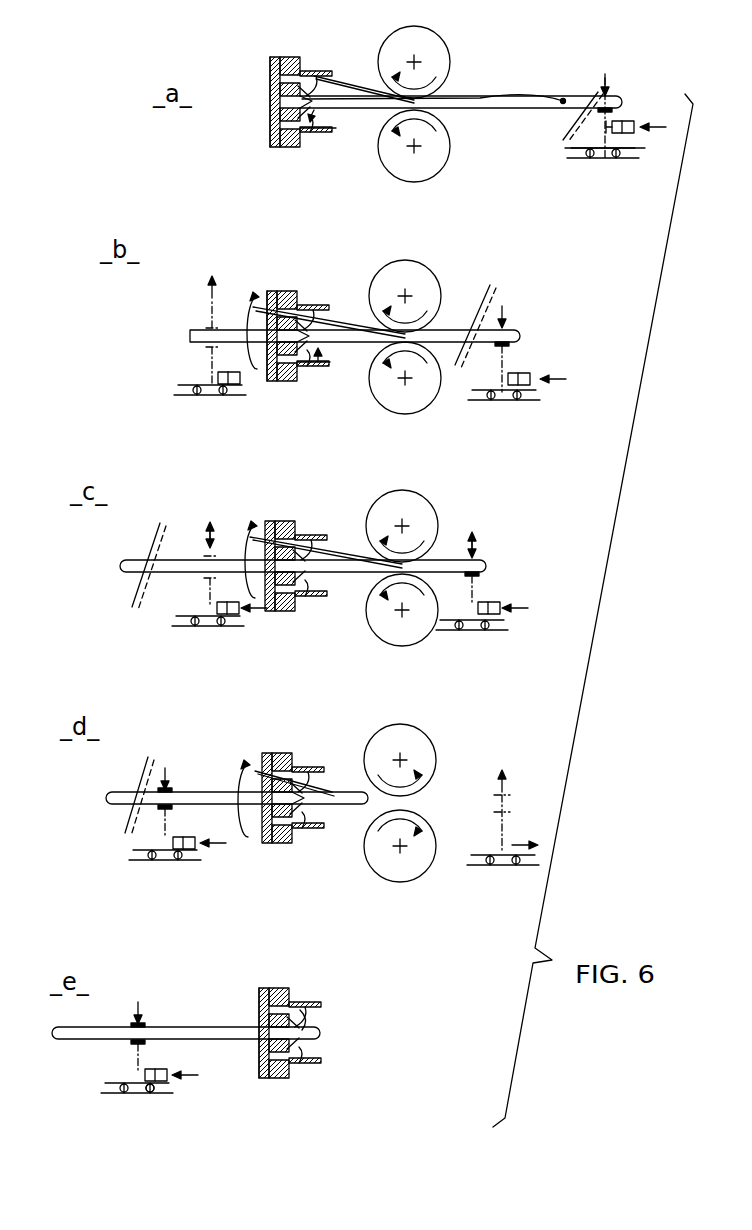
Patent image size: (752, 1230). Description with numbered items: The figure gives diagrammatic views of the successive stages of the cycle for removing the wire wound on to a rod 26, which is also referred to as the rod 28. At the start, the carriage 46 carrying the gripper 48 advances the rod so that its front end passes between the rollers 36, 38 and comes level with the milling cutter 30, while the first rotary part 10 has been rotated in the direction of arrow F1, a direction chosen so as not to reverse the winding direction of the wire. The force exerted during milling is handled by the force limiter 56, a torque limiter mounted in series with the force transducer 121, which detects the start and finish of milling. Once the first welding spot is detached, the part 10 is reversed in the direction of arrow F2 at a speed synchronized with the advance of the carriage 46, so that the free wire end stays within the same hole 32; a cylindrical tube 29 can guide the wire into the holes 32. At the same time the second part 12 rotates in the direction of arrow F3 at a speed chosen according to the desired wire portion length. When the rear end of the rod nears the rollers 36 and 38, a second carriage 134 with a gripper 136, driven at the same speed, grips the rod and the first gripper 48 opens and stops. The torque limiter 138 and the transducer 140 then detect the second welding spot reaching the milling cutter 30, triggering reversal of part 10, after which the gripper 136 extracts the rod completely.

In FIG. 6a, the first rotary part 10 is at (296, 56).
In FIG. 6b, the first rotary part 10 is at (298, 336).
In FIG. 6c, the first rotary part 10 is at (323, 566).
In FIG. 6d, the first rotary part 10 is at (281, 798).
In FIG. 6e, the first rotary part 10 is at (282, 1080).
In FIG. 6a, the second rotary part 12 is at (271, 58).
In FIG. 6e, the second rotary part 12 is at (262, 990).
In FIG. 6a, the rod 26 is at (497, 96).
In FIG. 6b, the rod 26 is at (188, 336).
In FIG. 6c, the rod 26 is at (118, 563).
In FIG. 6d, the rod 26 is at (110, 797).
In FIG. 6e, the rod 26 is at (238, 1032).
In FIG. 6a, the rod 28 is at (342, 93).
In FIG. 6b, the rod 28 is at (336, 326).
In FIG. 6d, the rod 28 is at (262, 775).
In FIG. 6e, the rod 28 is at (308, 1008).
In FIG. 6a, the cylindrical tube 29 is at (333, 133).
In FIG. 6b, the cylindrical tube 29 is at (325, 368).
In FIG. 6a, the milling cutter 30 is at (322, 114).
In FIG. 6b, the milling cutter 30 is at (318, 358).
In FIG. 6d, the milling cutter 30 is at (310, 793).
In FIG. 6b, the holes 32 is at (296, 304).
In FIG. 6a, the roller 36 is at (424, 48).
In FIG. 6b, the roller 36 is at (425, 285).
In FIG. 6c, the roller 36 is at (377, 513).
In FIG. 6d, the roller 36 is at (415, 745).
In FIG. 6a, the roller 38 is at (432, 143).
In FIG. 6b, the roller 38 is at (425, 393).
In FIG. 6c, the roller 38 is at (372, 616).
In FIG. 6d, the roller 38 is at (378, 865).
In FIG. 6a, the carriage 46 is at (582, 155).
In FIG. 6b, the carriage 46 is at (534, 398).
In FIG. 6c, the carriage 46 is at (495, 632).
In FIG. 6d, the carriage 46 is at (480, 858).
In FIG. 6a, the gripper 48 is at (598, 98).
In FIG. 6b, the gripper 48 is at (504, 330).
In FIG. 6c, the gripper 48 is at (478, 550).
In FIG. 6d, the gripper 48 is at (510, 800).
In FIG. 6a, the force limiter 56 is at (615, 124).
In FIG. 6a, the force transducer 121 is at (628, 150).
In FIG. 6c, the carriage 134 is at (182, 622).
In FIG. 6d, the carriage 134 is at (140, 852).
In FIG. 6e, the carriage 134 is at (110, 1083).
In FIG. 6b, the gripper 136 is at (212, 324).
In FIG. 6c, the gripper 136 is at (207, 548).
In FIG. 6e, the gripper 136 is at (143, 1025).
In FIG. 6d, the torque limiter 138 is at (180, 858).
In FIG. 6e, the torque limiter 138 is at (152, 1092).
In FIG. 6d, the transducer 140 is at (197, 848).
In FIG. 6e, the transducer 140 is at (168, 1080).
In FIG. 6a, the rotation direction arrow F1 is at (312, 128).
In FIG. 6b, the rotation direction arrow F2 is at (312, 366).
In FIG. 6b, the rotation direction arrow F3 is at (259, 300).